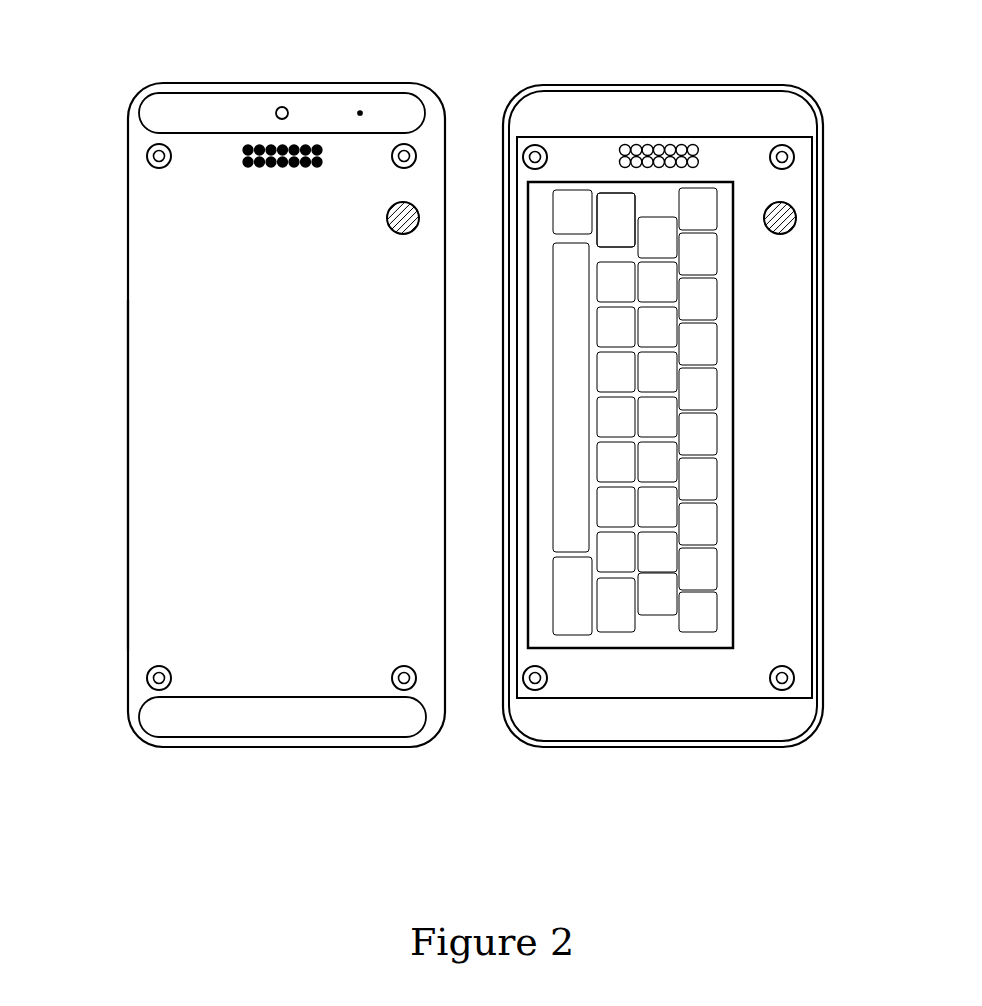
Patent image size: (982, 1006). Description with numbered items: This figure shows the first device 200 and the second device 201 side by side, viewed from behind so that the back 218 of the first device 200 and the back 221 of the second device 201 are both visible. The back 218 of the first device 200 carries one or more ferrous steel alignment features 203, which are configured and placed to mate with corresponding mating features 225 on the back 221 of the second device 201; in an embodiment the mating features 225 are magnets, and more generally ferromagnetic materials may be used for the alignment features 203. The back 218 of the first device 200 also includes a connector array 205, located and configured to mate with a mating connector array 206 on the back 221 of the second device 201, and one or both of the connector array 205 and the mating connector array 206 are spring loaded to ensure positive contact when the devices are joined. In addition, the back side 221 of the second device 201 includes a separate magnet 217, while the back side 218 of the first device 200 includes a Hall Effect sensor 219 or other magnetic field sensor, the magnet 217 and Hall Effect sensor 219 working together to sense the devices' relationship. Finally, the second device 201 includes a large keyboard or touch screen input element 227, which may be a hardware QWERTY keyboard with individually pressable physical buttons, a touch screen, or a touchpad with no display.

The first device 200 is at (263, 778).
The second device 201 is at (620, 775).
The ferrous steel alignment features 203 is at (158, 157).
The connector array 205 is at (301, 146).
The mating connector array 206 is at (682, 148).
The magnet 217 is at (795, 222).
The back 218 is at (145, 497).
The Hall Effect sensor 219 is at (388, 217).
The back 221 is at (800, 175).
The mating features 225 is at (783, 138).
The input element 227 is at (617, 216).